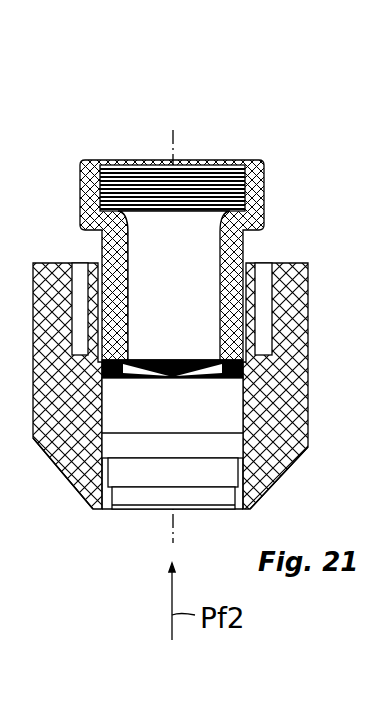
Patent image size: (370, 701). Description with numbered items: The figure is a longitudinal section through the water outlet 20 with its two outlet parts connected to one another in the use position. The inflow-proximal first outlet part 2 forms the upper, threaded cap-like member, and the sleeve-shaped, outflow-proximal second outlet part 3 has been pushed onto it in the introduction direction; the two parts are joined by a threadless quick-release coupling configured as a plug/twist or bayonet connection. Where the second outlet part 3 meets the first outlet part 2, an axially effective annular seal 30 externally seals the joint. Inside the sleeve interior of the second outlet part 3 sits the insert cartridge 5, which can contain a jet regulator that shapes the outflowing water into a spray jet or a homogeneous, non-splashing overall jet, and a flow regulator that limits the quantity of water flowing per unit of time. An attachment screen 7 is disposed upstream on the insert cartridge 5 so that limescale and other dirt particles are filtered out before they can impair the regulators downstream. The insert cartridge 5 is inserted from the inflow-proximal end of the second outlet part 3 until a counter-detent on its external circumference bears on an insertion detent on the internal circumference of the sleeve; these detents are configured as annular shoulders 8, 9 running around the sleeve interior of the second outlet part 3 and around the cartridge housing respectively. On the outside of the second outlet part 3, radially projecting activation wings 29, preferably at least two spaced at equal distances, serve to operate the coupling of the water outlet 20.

The water outlet 20 is at (207, 105).
The first outlet part 2 is at (250, 187).
The second outlet part 3 is at (245, 394).
The insert cartridge 5 is at (214, 427).
The attachment screen 7 is at (195, 352).
The annular shoulder 8 is at (114, 445).
The annular shoulder 9 is at (214, 472).
The activation wing 29 is at (73, 462).
The annular seal 30 is at (120, 353).